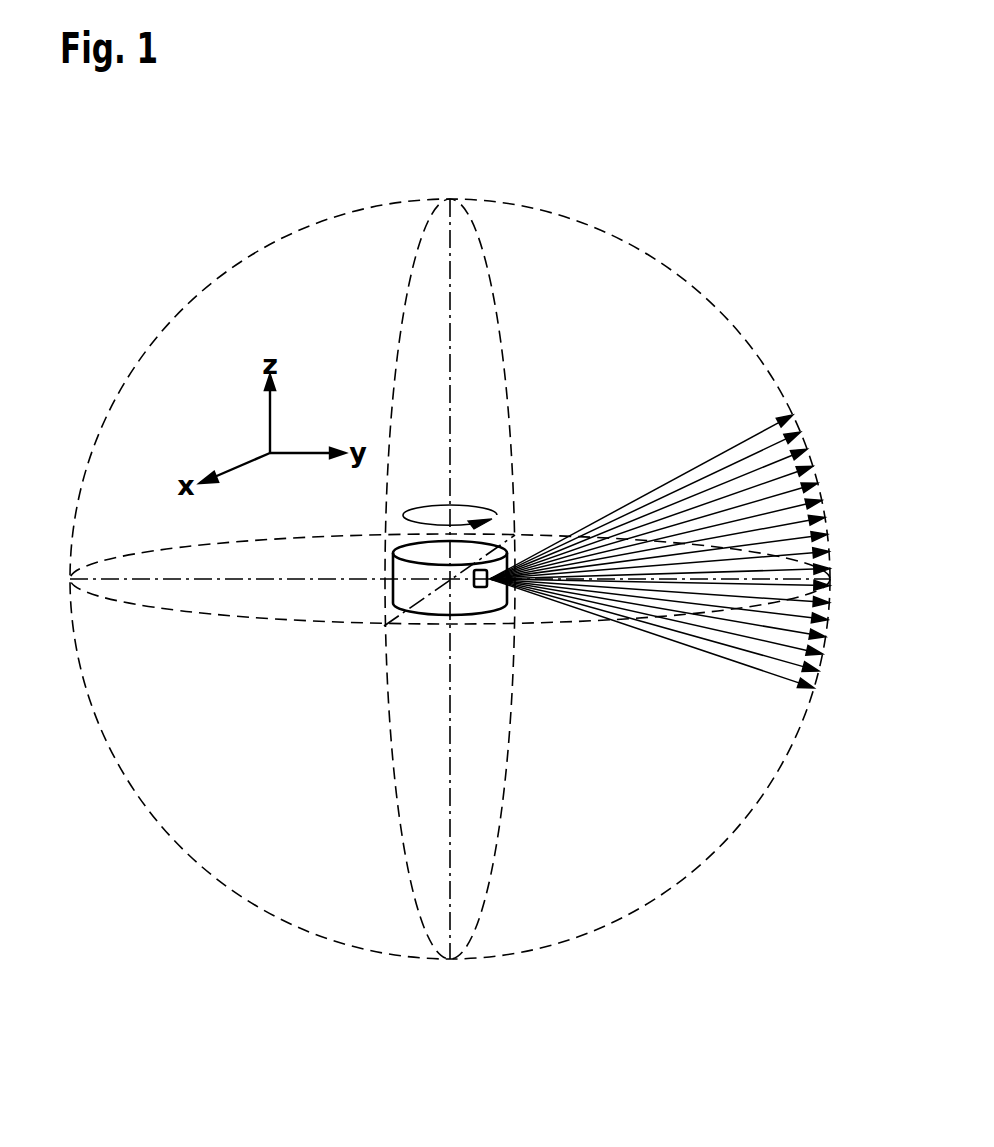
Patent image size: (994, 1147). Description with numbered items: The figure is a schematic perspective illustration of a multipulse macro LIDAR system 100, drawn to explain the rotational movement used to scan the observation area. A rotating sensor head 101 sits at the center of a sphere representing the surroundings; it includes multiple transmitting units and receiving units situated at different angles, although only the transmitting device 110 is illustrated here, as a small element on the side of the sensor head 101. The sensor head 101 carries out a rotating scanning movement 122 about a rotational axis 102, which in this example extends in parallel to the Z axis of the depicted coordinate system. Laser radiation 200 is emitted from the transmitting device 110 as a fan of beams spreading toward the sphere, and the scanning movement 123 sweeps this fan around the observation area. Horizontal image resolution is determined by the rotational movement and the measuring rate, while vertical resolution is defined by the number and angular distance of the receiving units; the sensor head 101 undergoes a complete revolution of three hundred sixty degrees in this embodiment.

The macro LIDAR system 100 is at (356, 639).
The rotating sensor head 101 is at (433, 604).
The rotational axis 102 is at (450, 300).
The transmitting device 110 is at (480, 592).
The rotating scanning movement 122 is at (484, 513).
The scanning movement 123 is at (855, 603).
The laser radiation 200 is at (622, 472).